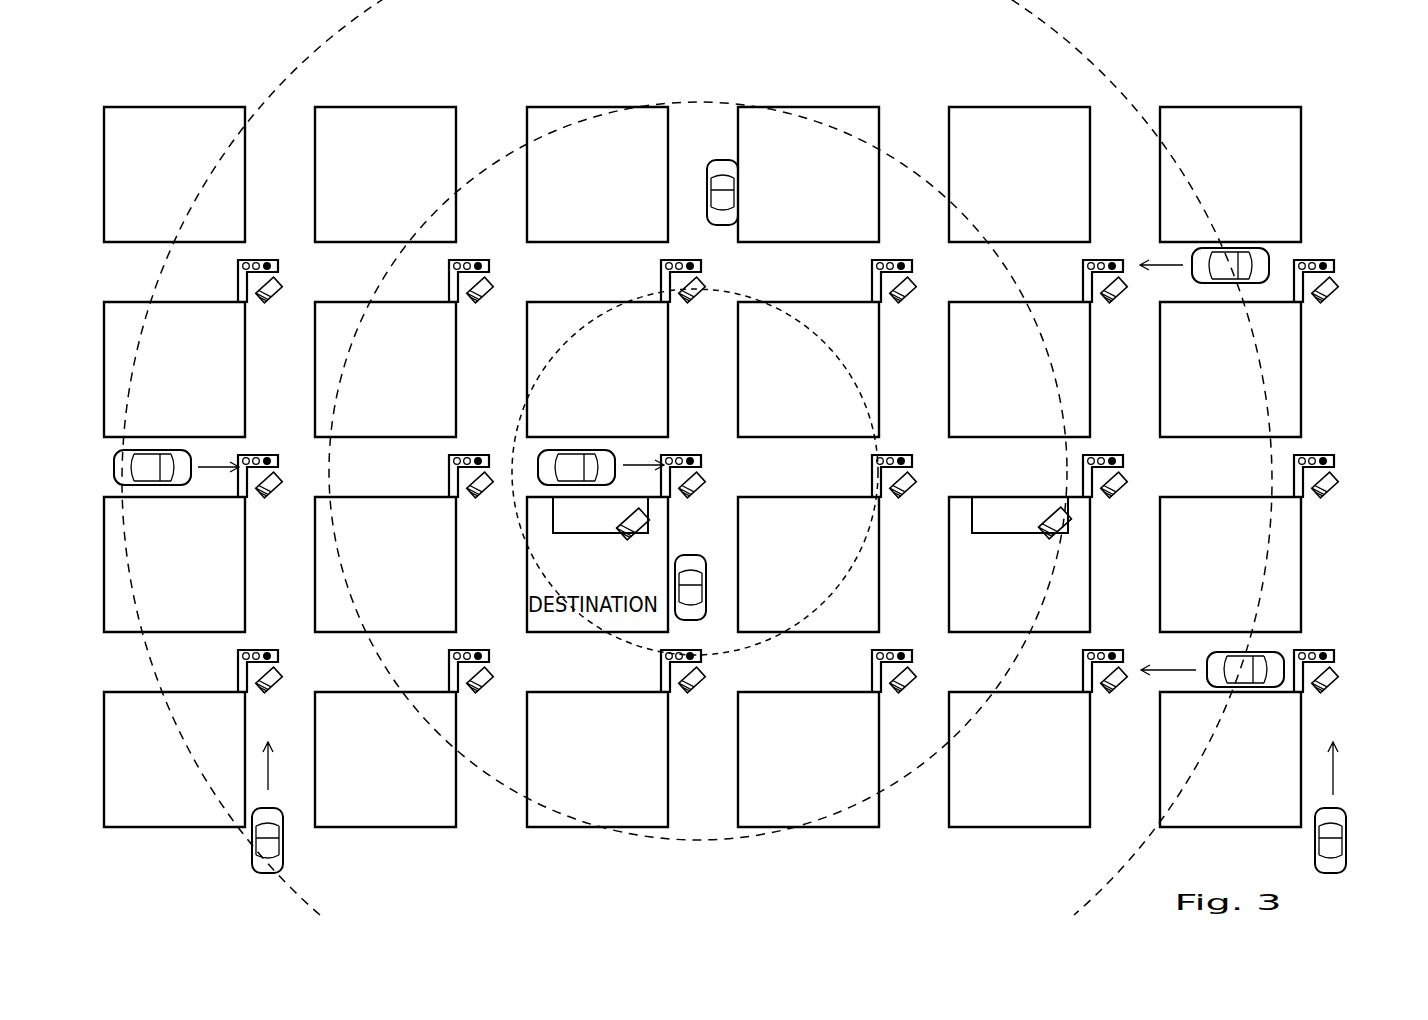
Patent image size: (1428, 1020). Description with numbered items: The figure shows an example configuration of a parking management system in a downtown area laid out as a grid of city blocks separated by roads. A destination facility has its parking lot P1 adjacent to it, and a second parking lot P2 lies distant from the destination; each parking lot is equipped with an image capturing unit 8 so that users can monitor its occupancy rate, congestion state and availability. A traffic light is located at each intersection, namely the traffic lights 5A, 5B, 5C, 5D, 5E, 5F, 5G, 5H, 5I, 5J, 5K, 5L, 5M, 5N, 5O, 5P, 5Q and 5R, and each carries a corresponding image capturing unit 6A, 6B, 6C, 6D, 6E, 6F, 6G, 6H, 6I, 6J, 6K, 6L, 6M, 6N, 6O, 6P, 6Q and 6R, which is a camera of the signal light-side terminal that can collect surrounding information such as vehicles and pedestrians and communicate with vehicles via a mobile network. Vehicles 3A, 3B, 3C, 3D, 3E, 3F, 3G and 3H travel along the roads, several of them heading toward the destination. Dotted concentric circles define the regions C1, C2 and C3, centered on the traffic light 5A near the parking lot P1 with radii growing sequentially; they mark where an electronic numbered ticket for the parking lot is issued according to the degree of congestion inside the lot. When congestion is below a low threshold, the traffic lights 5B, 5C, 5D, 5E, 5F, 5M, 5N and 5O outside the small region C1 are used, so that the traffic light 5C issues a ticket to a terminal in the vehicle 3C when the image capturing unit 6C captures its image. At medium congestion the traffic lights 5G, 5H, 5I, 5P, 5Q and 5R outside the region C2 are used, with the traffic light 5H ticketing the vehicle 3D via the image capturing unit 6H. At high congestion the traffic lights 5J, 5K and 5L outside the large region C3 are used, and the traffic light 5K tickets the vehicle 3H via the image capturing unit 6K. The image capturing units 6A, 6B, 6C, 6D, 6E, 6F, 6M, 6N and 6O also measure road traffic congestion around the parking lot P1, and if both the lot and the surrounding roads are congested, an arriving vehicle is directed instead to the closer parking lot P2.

The vehicle 3A is at (588, 448).
The vehicle 3B is at (706, 590).
The vehicle 3C is at (738, 183).
The vehicle 3D is at (1222, 651).
The vehicle 3E is at (1228, 248).
The vehicle 3F is at (150, 449).
The vehicle 3G is at (284, 848).
The vehicle 3H is at (1347, 848).
The traffic light 5A is at (692, 453).
The traffic light 5B is at (660, 658).
The traffic light 5C is at (692, 258).
The traffic light 5D is at (903, 453).
The traffic light 5E is at (903, 648).
The traffic light 5F is at (903, 258).
The traffic light 5G is at (1113, 453).
The traffic light 5H is at (1113, 648).
The traffic light 5I is at (1113, 258).
The traffic light 5J is at (1325, 453).
The traffic light 5K is at (1325, 648).
The traffic light 5L is at (1325, 258).
The traffic light 5M is at (480, 453).
The traffic light 5N is at (480, 648).
The traffic light 5O is at (480, 258).
The traffic light 5P is at (269, 453).
The traffic light 5Q is at (238, 655).
The traffic light 5R is at (269, 258).
The image capturing unit 6A is at (692, 495).
The image capturing unit 6B is at (692, 690).
The image capturing unit 6C is at (692, 300).
The image capturing unit 6D is at (904, 495).
The image capturing unit 6E is at (904, 690).
The image capturing unit 6F is at (904, 300).
The image capturing unit 6G is at (1116, 495).
The image capturing unit 6H is at (1116, 690).
The image capturing unit 6I is at (1115, 300).
The image capturing unit 6J is at (1328, 495).
The image capturing unit 6K is at (1328, 690).
The image capturing unit 6L is at (1328, 300).
The image capturing unit 6M is at (482, 495).
The image capturing unit 6N is at (482, 690).
The image capturing unit 6O is at (482, 300).
The image capturing unit 6P is at (271, 495).
The image capturing unit 6Q is at (272, 690).
The image capturing unit 6R is at (271, 300).
The image capturing unit 8 is at (612, 538).
The parking lot P1 is at (600, 515).
The parking lot P2 is at (1020, 515).
The region C1 is at (737, 292).
The region C2 is at (705, 100).
The region C3 is at (264, 96).